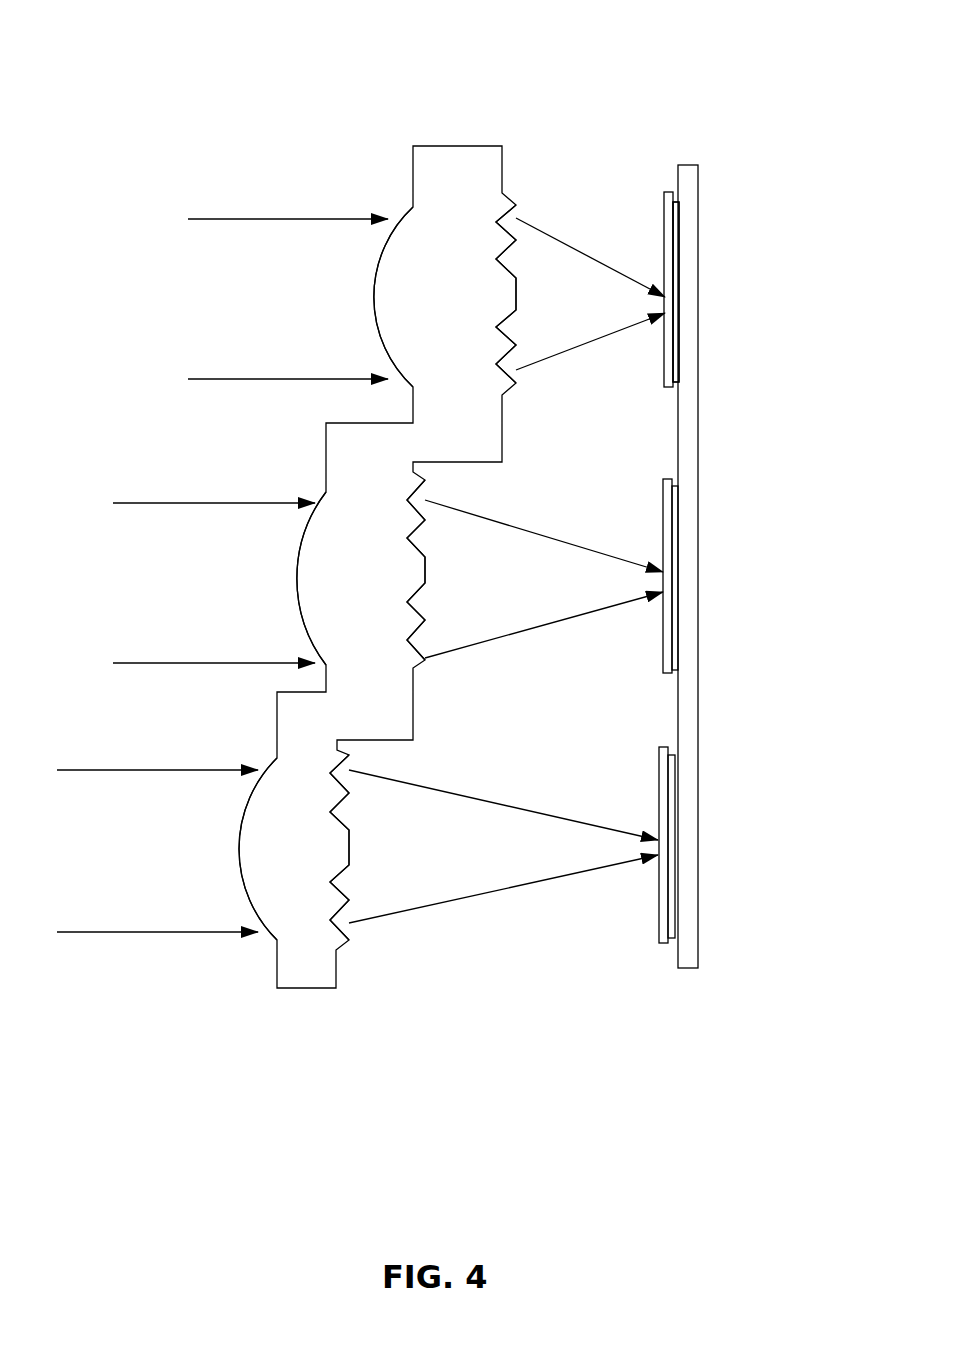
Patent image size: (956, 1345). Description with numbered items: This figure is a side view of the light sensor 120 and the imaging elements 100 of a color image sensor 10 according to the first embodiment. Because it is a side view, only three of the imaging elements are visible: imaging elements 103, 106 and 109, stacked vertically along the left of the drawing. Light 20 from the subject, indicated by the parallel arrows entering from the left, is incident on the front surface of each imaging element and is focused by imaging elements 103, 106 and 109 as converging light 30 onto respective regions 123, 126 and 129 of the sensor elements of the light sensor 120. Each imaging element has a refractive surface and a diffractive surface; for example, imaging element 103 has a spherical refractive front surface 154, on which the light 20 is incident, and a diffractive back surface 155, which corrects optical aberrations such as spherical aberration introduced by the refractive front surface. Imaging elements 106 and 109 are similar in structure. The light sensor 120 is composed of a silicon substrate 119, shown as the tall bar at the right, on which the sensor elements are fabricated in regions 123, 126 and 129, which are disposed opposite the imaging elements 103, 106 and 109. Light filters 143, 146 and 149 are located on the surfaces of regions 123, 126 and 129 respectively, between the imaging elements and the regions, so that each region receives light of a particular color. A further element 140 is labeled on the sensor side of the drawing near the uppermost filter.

The color image sensor 10 is at (452, 1125).
The light 20 is at (268, 195).
The light 30 is at (585, 90).
The imaging elements 100 is at (320, 1028).
The imaging element 103 is at (374, 292).
The imaging element 106 is at (298, 592).
The imaging element 109 is at (240, 857).
The spherical refractive front surface 154 is at (380, 263).
The diffractive back surface 155 is at (516, 360).
The silicon substrate 119 is at (692, 168).
The light sensor 120 is at (683, 985).
The filter 140 is at (680, 175).
The light filter 143 is at (664, 230).
The light filter 146 is at (663, 518).
The light filter 149 is at (658, 782).
The region 123 is at (678, 384).
The region 126 is at (676, 670).
The region 129 is at (673, 938).